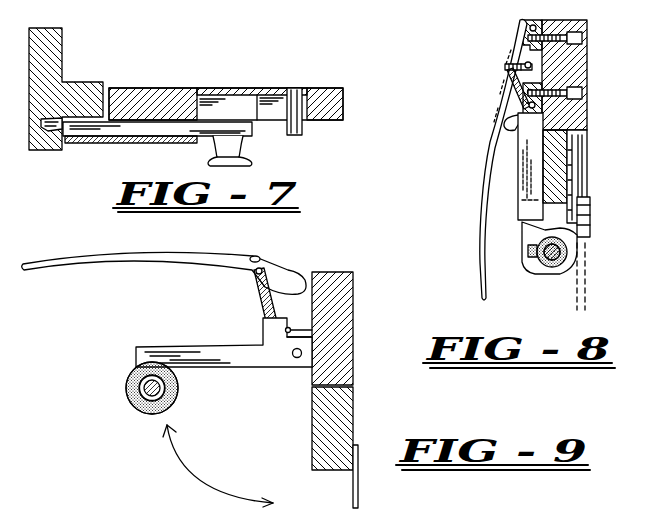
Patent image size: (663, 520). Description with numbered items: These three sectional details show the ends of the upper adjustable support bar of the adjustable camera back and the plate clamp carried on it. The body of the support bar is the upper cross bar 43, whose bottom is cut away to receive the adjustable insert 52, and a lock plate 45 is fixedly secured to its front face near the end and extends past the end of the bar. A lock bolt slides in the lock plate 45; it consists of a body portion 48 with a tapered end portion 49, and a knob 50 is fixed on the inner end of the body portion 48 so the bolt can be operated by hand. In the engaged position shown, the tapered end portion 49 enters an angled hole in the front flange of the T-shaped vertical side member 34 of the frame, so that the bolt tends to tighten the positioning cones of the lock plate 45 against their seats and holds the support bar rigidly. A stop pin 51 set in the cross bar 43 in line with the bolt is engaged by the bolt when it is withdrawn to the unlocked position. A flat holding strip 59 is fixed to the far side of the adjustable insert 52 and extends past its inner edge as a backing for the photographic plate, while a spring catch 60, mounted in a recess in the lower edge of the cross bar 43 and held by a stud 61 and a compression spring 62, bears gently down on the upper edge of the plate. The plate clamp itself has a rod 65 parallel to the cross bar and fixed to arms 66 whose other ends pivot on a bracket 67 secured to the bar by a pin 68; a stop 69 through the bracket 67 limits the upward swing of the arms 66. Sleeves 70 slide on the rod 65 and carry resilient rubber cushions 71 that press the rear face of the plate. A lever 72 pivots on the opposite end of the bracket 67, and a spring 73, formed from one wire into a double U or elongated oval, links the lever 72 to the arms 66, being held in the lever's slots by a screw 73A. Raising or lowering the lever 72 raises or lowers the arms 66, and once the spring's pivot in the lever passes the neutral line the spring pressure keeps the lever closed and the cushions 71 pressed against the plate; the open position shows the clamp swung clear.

In FIG. 7, the vertical side member 34 is at (50, 65).
In FIG. 7, the upper cross bar 43 is at (146, 88).
In FIG. 8, the upper cross bar 43 is at (568, 68).
In FIG. 9, the upper cross bar 43 is at (338, 288).
In FIG. 7, the lock plate 45 is at (96, 143).
In FIG. 7, the body portion 48 is at (152, 130).
In FIG. 7, the tapered end portion 49 is at (52, 128).
In FIG. 7, the knob 50 is at (240, 152).
In FIG. 7, the stop pin 51 is at (299, 95).
In FIG. 8, the adjustable insert 52 is at (557, 170).
In FIG. 9, the adjustable insert 52 is at (334, 428).
In FIG. 9, the flat holding strip 59 is at (358, 480).
In FIG. 8, the spring catch 60 is at (535, 228).
In FIG. 8, the stud 61 is at (576, 192).
In FIG. 8, the compression spring 62 is at (590, 221).
In FIG. 9, the rod 65 is at (143, 391).
In FIG. 8, the arm 66 is at (525, 157).
In FIG. 9, the arm 66 is at (180, 347).
In FIG. 8, the bracket 67 is at (525, 43).
In FIG. 9, the bracket 67 is at (313, 338).
In FIG. 8, the pin 68 is at (520, 108).
In FIG. 9, the pin 68 is at (302, 355).
In FIG. 9, the stop 69 is at (291, 328).
In FIG. 9, the sleeve 70 is at (146, 383).
In FIG. 9, the rubber cushion 71 is at (180, 392).
In FIG. 8, the lever 72 is at (503, 160).
In FIG. 9, the lever 72 is at (122, 261).
In FIG. 8, the spring 73 is at (514, 100).
In FIG. 9, the spring 73 is at (262, 300).
In FIG. 8, the screw 73A is at (503, 64).
In FIG. 9, the screw 73A is at (261, 257).